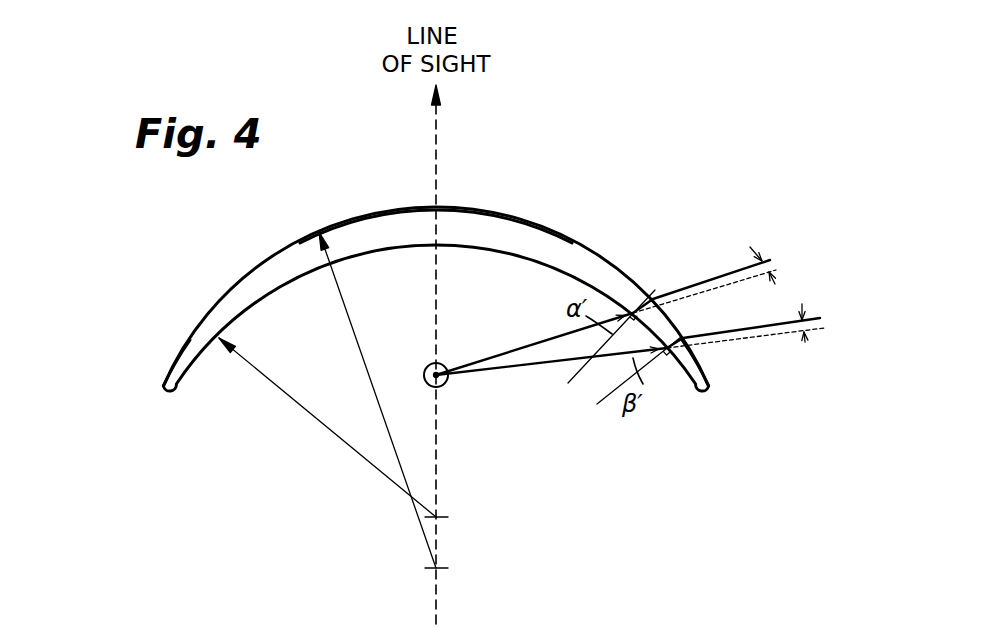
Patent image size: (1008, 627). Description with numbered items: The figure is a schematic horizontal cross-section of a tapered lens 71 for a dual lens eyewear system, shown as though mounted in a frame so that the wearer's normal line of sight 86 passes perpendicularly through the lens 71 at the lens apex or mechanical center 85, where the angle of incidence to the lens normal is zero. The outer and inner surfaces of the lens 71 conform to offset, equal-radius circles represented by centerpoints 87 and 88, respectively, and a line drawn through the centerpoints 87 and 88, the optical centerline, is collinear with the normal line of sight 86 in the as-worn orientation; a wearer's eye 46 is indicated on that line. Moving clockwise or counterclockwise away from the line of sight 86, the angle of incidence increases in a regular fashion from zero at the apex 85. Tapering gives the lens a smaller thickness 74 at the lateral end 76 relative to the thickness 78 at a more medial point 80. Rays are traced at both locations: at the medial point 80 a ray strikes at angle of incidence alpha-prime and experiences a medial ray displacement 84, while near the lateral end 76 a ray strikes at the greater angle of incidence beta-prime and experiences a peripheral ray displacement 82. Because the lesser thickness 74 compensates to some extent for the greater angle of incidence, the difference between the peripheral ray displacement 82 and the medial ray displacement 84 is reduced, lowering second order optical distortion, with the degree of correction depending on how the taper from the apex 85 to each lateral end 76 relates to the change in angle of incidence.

The eye of the wearer 46 is at (445, 386).
The lens 71 is at (615, 183).
The lens thickness 74 is at (212, 378).
The lateral end 76 is at (133, 370).
The lens thickness 78 is at (629, 296).
The medial point 80 is at (643, 290).
The peripheral ray displacement 82 is at (823, 320).
The medial ray displacement 84 is at (776, 258).
The lens apex 85 is at (437, 207).
The normal line of sight 86 is at (437, 122).
The centerpoint 87 is at (438, 515).
The centerpoint 88 is at (438, 566).